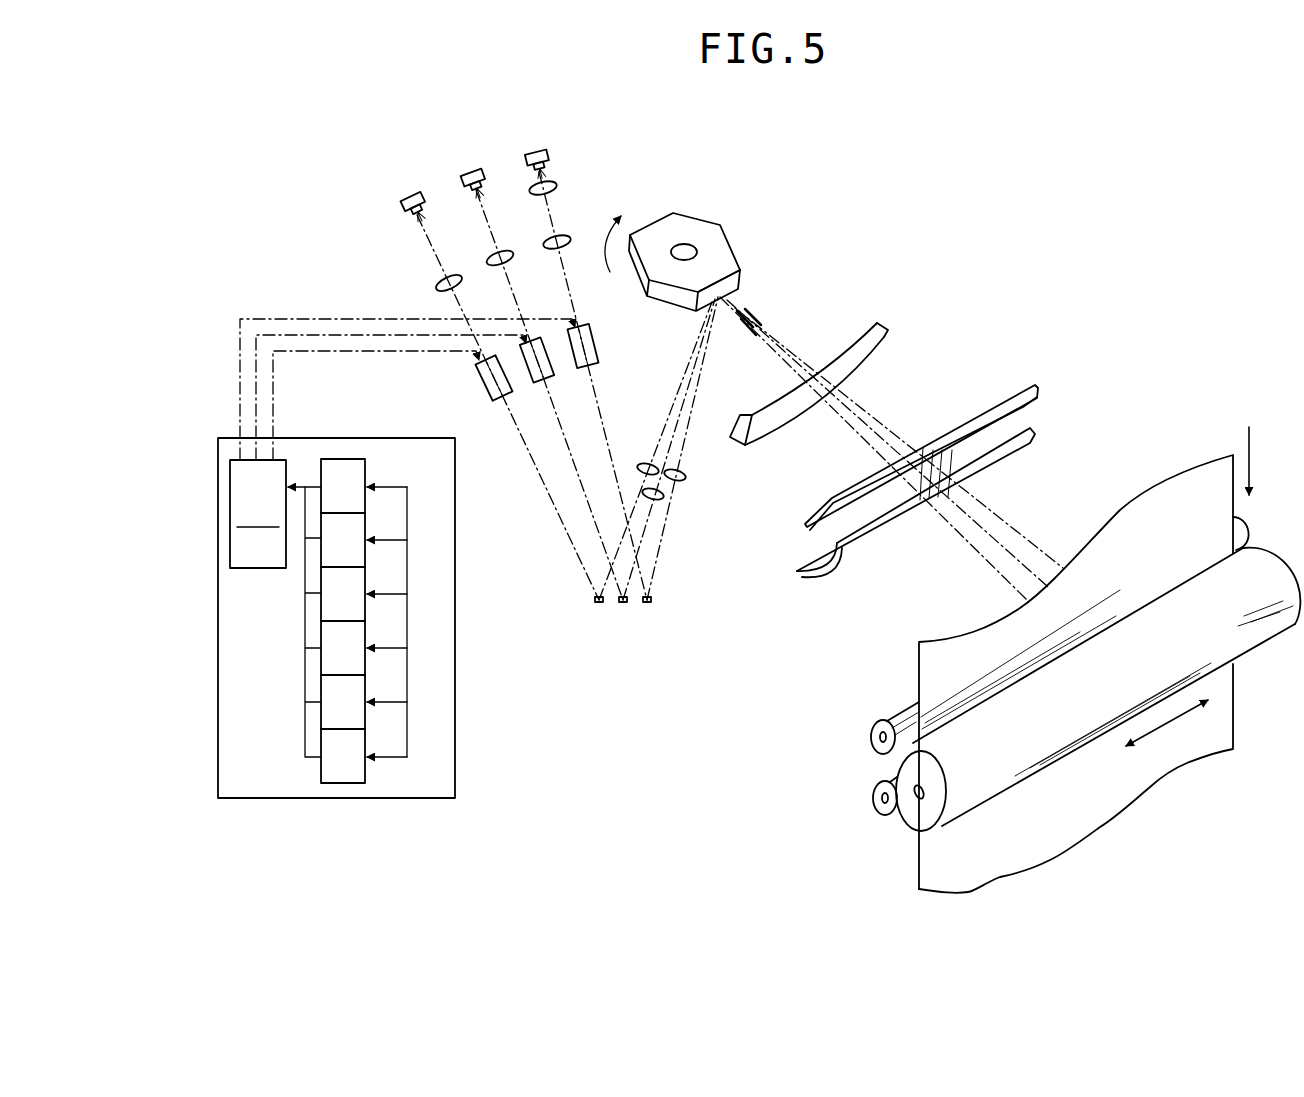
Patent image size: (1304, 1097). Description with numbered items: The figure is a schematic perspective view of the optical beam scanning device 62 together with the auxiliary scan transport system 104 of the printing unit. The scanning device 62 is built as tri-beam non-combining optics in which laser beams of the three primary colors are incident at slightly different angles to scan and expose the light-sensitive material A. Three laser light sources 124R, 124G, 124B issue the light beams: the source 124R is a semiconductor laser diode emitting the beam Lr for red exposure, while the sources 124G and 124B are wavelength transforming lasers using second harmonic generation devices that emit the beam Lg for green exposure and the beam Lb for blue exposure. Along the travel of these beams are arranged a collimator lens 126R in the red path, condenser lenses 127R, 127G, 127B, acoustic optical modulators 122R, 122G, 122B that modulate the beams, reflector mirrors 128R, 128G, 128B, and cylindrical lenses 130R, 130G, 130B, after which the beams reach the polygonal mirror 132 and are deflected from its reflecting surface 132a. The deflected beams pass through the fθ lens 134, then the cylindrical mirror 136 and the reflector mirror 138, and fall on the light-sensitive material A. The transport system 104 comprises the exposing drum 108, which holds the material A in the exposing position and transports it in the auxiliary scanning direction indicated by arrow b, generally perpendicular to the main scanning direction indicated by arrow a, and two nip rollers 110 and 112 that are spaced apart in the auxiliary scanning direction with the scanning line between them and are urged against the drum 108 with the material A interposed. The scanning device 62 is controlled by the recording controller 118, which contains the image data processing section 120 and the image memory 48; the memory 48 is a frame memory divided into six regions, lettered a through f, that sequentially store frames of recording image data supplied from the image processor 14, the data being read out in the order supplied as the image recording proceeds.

The optical beam scanning device 62 is at (884, 186).
The auxiliary scan transport system 104 is at (798, 825).
The exposing drum 108 is at (917, 813).
The nip roller 110 is at (871, 730).
The nip roller 112 is at (873, 788).
The recording controller 118 is at (457, 668).
The image data processing section 120 is at (402, 443).
The image processor 14 is at (407, 729).
The image memory 48 is at (320, 775).
The acoustic optical modulator 122B is at (483, 379).
The acoustic optical modulator 122G is at (553, 377).
The acoustic optical modulator 122R is at (638, 338).
The laser light source 124B is at (411, 199).
The laser light source 124G is at (474, 164).
The laser light source 124R is at (547, 149).
The collimator lens 126R is at (560, 186).
The condenser lens 127B is at (447, 280).
The condenser lens 127G is at (493, 256).
The condenser lens 127R is at (570, 246).
The reflector mirror 128B is at (592, 599).
The reflector mirror 128G is at (622, 605).
The reflector mirror 128R is at (648, 607).
The cylindrical lens 130B is at (652, 462).
The cylindrical lens 130G is at (657, 501).
The cylindrical lens 130R is at (686, 474).
The polygonal mirror 132 is at (673, 235).
The reflecting surface of polygonal mirror 132a is at (737, 284).
The fθ lens 134 is at (879, 327).
The cylindrical mirror 136 is at (1041, 441).
The reflector mirror 138 is at (1029, 383).
The light-sensitive material A is at (1152, 518).
The main scanning direction a is at (1167, 726).
The auxiliary scanning direction b is at (1260, 461).
The light beam for B exposure Lb is at (558, 517).
The light beam for G exposure Lg is at (574, 461).
The light beam for R exposure Lr is at (603, 413).